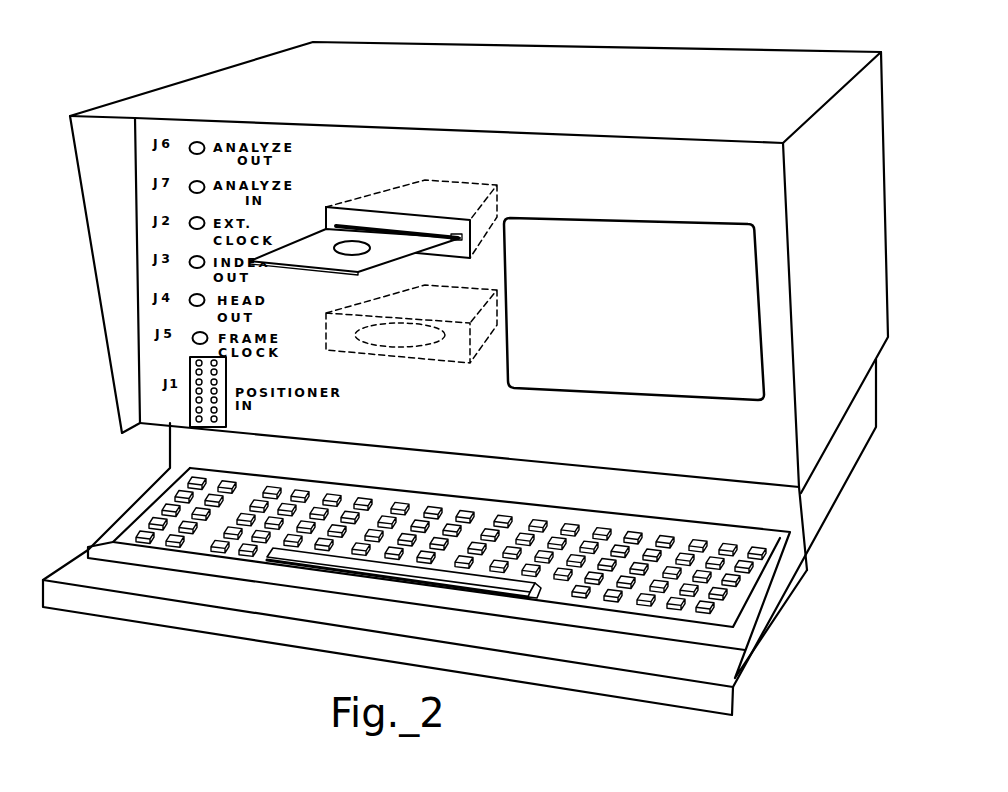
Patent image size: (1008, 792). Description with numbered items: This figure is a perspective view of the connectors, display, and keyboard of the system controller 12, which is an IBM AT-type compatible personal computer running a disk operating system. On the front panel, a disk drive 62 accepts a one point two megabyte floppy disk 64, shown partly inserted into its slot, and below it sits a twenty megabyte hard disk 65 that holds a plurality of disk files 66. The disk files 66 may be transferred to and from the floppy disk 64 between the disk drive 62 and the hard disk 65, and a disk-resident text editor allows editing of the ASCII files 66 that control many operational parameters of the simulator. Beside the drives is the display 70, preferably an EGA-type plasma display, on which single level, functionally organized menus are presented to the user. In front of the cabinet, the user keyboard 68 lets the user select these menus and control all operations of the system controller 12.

The system controller 12 is at (132, 46).
The disk drive 62 is at (408, 213).
The floppy disk 64 is at (293, 243).
The hard disk 65 is at (411, 324).
The disk files 66 is at (410, 346).
The user keyboard 68 is at (735, 603).
The display 70 is at (646, 332).